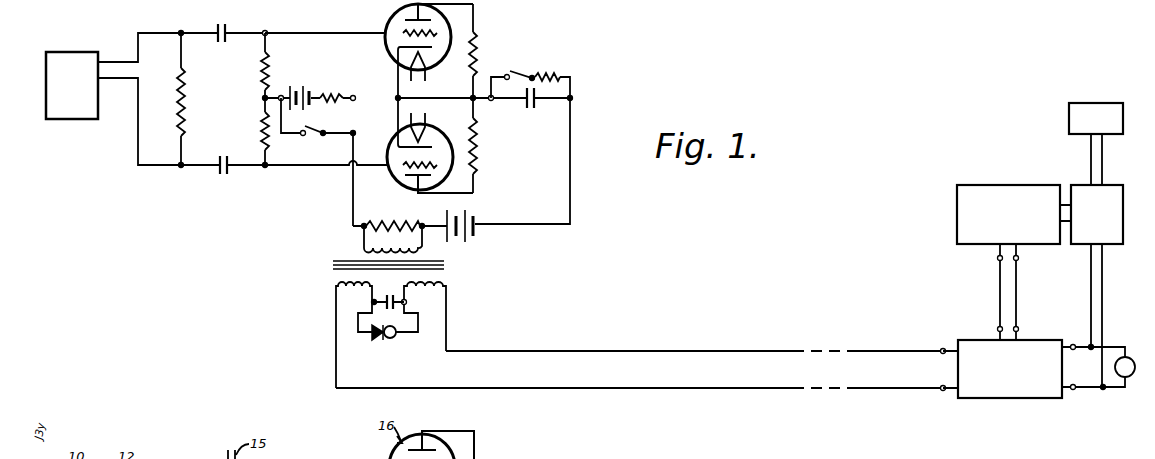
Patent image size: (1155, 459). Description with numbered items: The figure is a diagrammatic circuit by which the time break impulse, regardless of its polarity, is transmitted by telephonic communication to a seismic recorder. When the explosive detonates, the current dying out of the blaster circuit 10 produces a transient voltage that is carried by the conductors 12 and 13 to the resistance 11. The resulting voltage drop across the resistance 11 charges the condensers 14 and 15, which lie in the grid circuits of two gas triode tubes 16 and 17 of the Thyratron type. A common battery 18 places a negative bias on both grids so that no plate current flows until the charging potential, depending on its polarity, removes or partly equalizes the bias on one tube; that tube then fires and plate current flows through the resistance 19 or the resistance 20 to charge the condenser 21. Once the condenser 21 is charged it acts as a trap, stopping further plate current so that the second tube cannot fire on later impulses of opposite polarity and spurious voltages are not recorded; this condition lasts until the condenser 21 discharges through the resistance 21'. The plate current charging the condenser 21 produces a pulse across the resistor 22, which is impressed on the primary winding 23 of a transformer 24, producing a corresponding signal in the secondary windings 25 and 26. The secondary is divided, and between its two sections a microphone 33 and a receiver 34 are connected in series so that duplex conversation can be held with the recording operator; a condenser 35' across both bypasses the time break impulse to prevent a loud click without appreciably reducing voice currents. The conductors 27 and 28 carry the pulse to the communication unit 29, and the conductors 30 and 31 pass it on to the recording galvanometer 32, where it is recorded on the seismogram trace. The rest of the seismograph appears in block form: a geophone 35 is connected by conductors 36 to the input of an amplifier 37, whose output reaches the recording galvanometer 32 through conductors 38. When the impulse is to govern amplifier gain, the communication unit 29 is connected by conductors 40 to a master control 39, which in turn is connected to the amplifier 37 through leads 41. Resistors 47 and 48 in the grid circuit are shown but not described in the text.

The blaster circuit 10 is at (74, 56).
The resistance 11 is at (187, 100).
The conductor 12 is at (110, 60).
The conductor 13 is at (118, 80).
The condenser 14 is at (236, 154).
The condenser 15 is at (231, 27).
The gas triode tube 16 is at (382, 27).
The gas triode tube 17 is at (452, 110).
The battery 18 is at (311, 82).
The resistance 19 is at (479, 52).
The resistance 20 is at (480, 158).
The condenser 21 is at (485, 156).
The resistance 21' is at (541, 54).
The resistor 22 is at (390, 225).
The primary winding 23 is at (403, 248).
The transformer 24 is at (325, 271).
The secondary winding 25 is at (349, 288).
The secondary winding 26 is at (421, 290).
The conductor 27 is at (614, 390).
The conductor 28 is at (606, 350).
The communication unit 29 is at (971, 400).
The conductor 30 is at (1082, 340).
The conductor 31 is at (1090, 385).
The recording galvanometer 32 is at (1132, 356).
The microphone 33 is at (370, 342).
The receiver 34 is at (393, 340).
The geophone 35 is at (1096, 103).
The condenser 35' is at (389, 295).
The conductors 36 is at (1102, 152).
The amplifier 37 is at (1081, 248).
The conductors 38 is at (1103, 298).
The master control 39 is at (955, 205).
The conductors 40 is at (1002, 300).
The leads 41 is at (1067, 185).
The resistor 47 is at (271, 148).
The resistor 48 is at (270, 72).